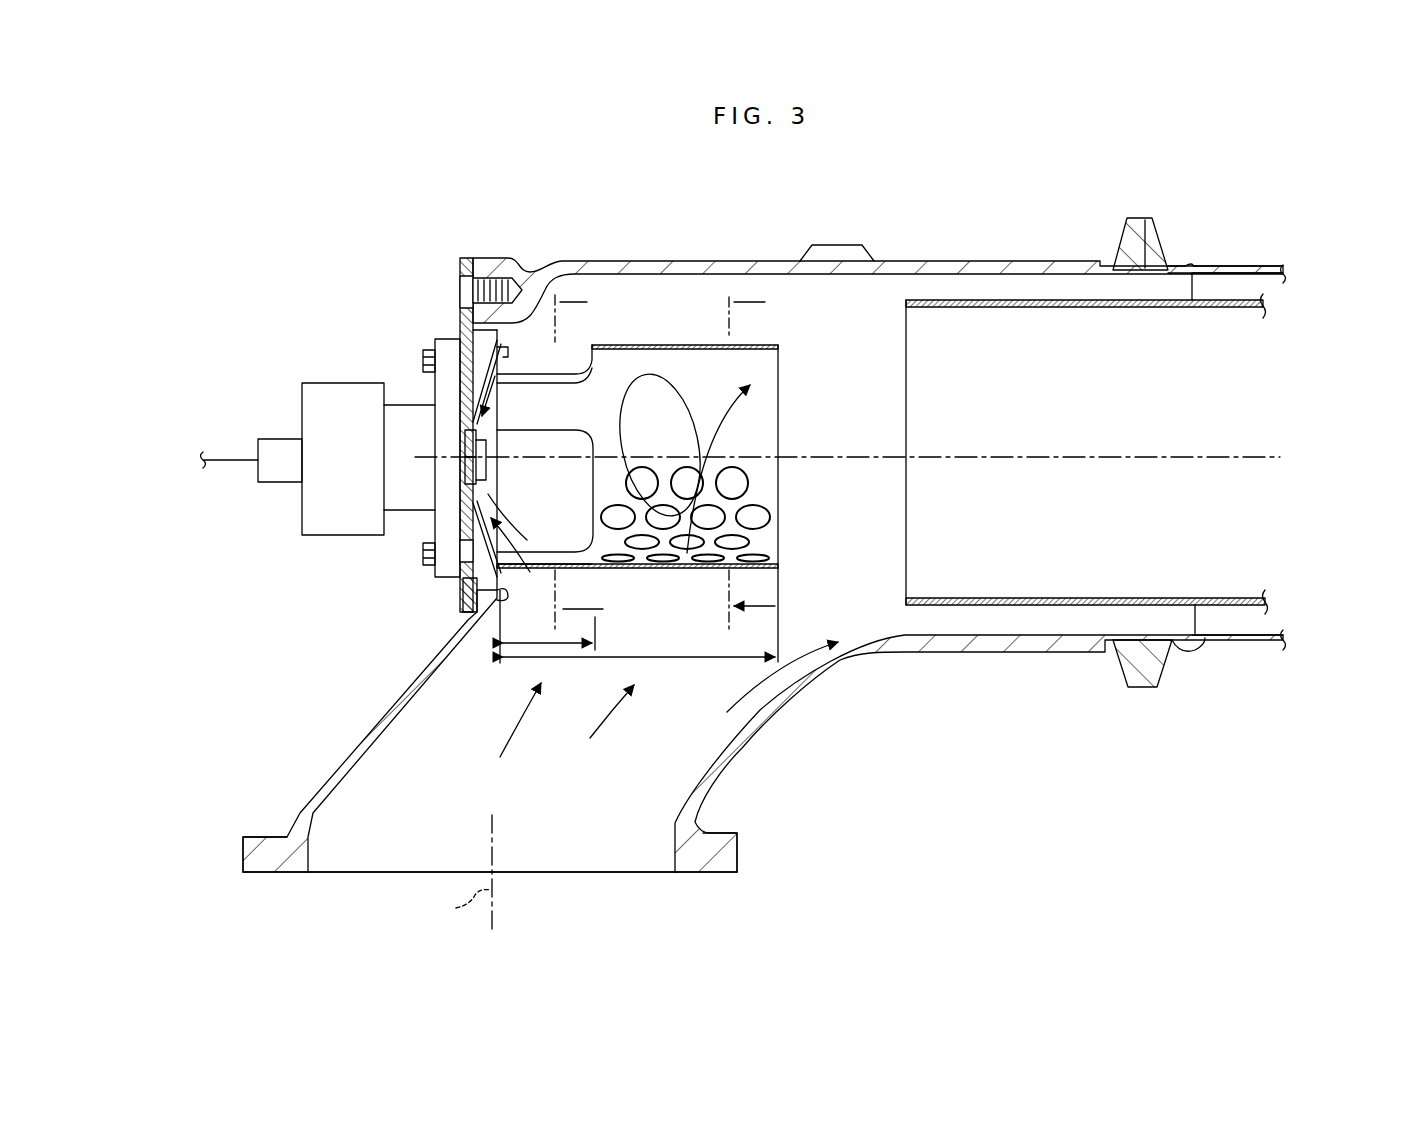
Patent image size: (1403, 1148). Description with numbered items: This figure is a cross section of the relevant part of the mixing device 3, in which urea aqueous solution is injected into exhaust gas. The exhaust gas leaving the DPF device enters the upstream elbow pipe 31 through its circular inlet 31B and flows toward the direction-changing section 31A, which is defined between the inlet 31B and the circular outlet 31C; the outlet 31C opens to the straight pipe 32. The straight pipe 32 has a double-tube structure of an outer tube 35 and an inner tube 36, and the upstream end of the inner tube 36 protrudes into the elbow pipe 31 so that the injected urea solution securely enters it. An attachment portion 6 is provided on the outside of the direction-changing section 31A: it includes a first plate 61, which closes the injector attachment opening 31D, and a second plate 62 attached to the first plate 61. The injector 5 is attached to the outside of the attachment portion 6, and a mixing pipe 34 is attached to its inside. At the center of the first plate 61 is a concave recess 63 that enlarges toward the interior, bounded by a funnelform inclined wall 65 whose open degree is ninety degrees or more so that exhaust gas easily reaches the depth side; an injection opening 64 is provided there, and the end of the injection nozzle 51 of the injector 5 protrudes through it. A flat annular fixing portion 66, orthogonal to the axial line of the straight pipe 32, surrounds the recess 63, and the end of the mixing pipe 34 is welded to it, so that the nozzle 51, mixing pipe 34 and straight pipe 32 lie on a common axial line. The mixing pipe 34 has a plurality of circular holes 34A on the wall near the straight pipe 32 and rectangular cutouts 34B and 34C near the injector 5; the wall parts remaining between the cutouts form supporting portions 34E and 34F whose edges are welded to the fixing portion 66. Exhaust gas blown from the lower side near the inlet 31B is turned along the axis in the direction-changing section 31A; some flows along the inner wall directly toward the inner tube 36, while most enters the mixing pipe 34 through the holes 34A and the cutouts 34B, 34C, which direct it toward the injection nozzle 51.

The mixing device 3 is at (1024, 173).
The injector 5 is at (336, 383).
The attachment portion 6 is at (458, 347).
The upstream elbow pipe 31 is at (718, 266).
The direction-changing section 31A is at (631, 330).
The circular inlet 31B is at (508, 873).
The circular outlet 31C is at (1200, 618).
The injector attachment opening 31D is at (477, 590).
The straight pipe 32 is at (1265, 272).
The outer tube 35 is at (1272, 418).
The mixing pipe 34 is at (665, 343).
The circular holes 34A is at (642, 546).
The rectangular cutout 34B is at (560, 431).
The rectangular cutout 34C is at (562, 380).
The supporting portion 34E is at (493, 562).
The supporting portion 34F is at (540, 350).
The inner tube 36 is at (1250, 312).
The injection nozzle 51 is at (480, 470).
The first plate 61 is at (461, 330).
The second plate 62 is at (435, 378).
The concave recess 63 is at (497, 418).
The injection opening 64 is at (465, 444).
The funnelform inclined wall 65 is at (467, 490).
The flat annular fixing portion 66 is at (505, 596).